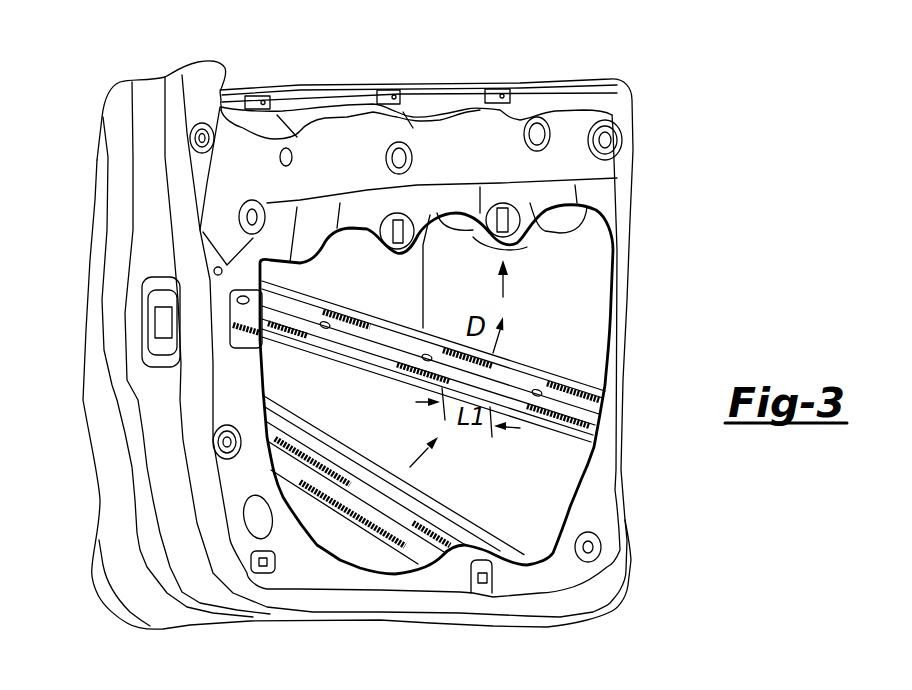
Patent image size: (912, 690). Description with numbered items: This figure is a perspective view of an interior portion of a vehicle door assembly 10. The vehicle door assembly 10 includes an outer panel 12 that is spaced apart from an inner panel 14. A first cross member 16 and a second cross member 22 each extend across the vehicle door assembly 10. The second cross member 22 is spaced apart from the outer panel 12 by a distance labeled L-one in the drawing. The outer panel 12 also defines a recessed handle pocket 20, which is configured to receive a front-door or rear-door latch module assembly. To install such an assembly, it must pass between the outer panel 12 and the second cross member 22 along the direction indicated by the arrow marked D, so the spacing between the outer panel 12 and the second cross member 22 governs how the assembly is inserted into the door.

The vehicle door assembly 10 is at (112, 70).
The outer panel 12 is at (519, 490).
The inner panel 14 is at (540, 198).
The first cross member 16 is at (397, 517).
The recessed handle pocket 20 is at (517, 237).
The second cross member 22 is at (353, 335).